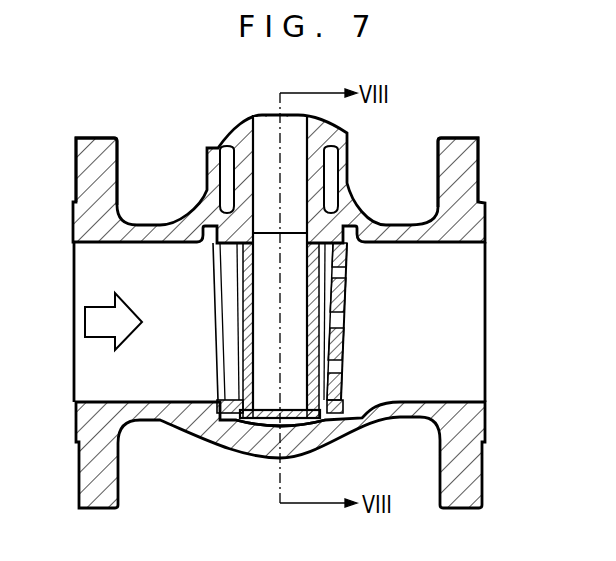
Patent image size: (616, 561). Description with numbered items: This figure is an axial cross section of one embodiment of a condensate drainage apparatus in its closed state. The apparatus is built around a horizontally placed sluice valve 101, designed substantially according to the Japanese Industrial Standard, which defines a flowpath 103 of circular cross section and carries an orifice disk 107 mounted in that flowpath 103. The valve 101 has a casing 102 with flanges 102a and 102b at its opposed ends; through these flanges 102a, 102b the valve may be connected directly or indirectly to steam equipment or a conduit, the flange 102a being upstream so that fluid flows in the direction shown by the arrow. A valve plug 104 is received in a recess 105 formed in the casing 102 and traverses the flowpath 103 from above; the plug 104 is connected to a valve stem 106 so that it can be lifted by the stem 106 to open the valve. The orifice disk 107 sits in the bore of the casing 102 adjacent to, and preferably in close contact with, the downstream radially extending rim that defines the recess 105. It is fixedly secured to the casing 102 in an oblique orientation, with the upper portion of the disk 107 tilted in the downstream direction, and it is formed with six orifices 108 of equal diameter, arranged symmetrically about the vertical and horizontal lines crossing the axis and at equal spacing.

The sluice valve 101 is at (484, 184).
The casing 102 is at (403, 224).
The flange 102a is at (100, 138).
The flange 102b is at (461, 138).
The flowpath 103 is at (99, 381).
The valve plug 104 is at (262, 353).
The recess 105 is at (248, 442).
The valve stem 106 is at (263, 135).
The orifice disk 107 is at (352, 348).
The orifices 108 is at (347, 271).